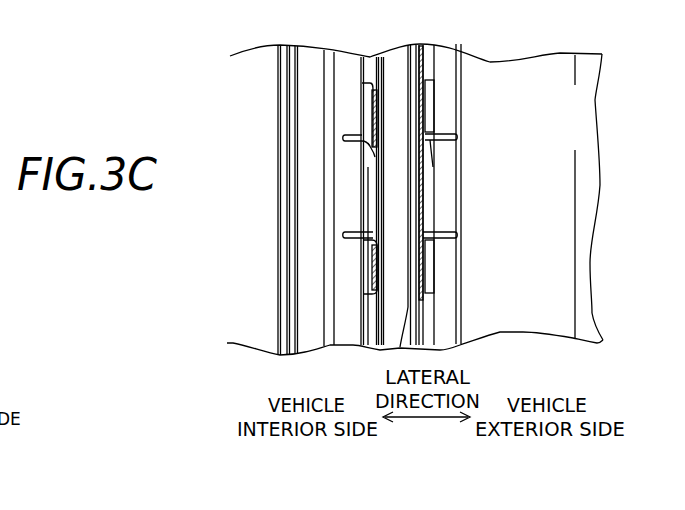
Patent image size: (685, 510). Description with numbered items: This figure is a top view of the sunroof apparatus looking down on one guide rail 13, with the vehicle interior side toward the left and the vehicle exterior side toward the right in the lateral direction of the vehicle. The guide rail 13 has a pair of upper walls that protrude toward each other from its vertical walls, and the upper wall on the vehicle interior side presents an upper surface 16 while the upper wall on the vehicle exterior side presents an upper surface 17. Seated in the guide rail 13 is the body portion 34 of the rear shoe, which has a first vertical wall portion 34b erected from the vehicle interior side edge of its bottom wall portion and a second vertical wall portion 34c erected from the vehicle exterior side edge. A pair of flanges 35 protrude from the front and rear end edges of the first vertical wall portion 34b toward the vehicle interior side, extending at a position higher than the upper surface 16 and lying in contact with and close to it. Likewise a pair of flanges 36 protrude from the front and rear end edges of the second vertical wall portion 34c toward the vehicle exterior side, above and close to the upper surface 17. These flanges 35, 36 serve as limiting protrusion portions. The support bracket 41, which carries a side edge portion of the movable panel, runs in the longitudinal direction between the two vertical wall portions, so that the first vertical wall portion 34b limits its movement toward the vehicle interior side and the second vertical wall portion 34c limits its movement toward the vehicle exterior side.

The guide rail 13 is at (512, 342).
The upper surface 16 is at (343, 193).
The upper surface 17 is at (443, 190).
The body portion 34 is at (450, 117).
The first vertical wall portion 34b is at (360, 168).
The second vertical wall portion 34c is at (433, 170).
The flange 35 is at (340, 141).
The flange 36 is at (435, 145).
The support bracket 41 is at (393, 320).